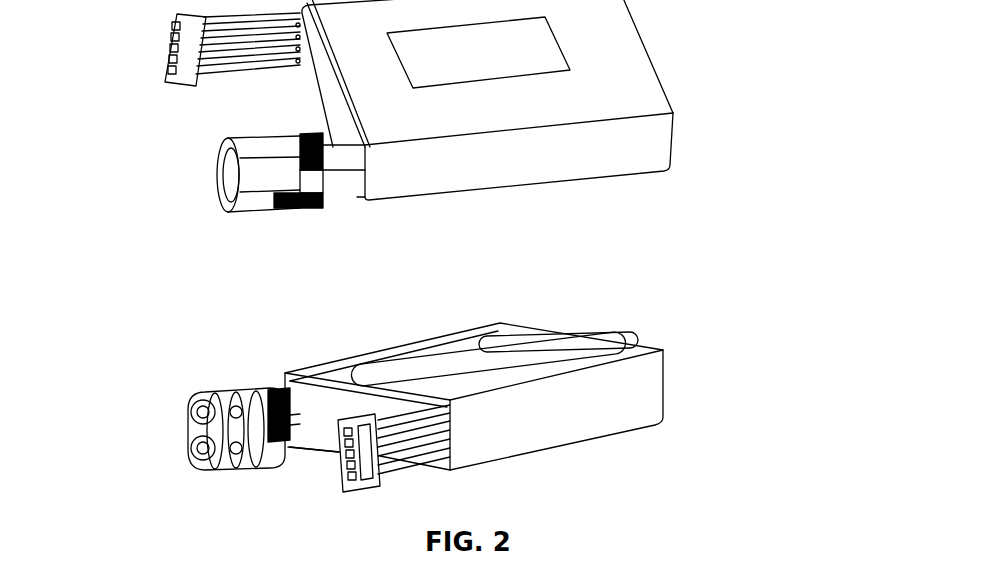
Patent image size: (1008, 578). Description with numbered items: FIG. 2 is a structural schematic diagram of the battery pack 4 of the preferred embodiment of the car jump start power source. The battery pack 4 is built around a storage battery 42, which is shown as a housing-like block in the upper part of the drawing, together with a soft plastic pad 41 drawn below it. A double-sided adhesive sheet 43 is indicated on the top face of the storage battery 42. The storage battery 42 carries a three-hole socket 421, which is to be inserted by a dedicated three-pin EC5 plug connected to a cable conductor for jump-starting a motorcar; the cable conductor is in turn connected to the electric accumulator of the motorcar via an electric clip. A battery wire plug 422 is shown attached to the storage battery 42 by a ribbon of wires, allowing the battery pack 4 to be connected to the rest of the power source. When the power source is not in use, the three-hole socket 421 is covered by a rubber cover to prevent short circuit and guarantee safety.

The battery pack 4 is at (461, 246).
The soft plastic pad 41 is at (615, 352).
The storage battery 42 is at (424, 145).
The three-hole socket 421 is at (217, 168).
The battery wire plug 422 is at (196, 51).
The double-sided adhesive sheet 43 is at (530, 57).